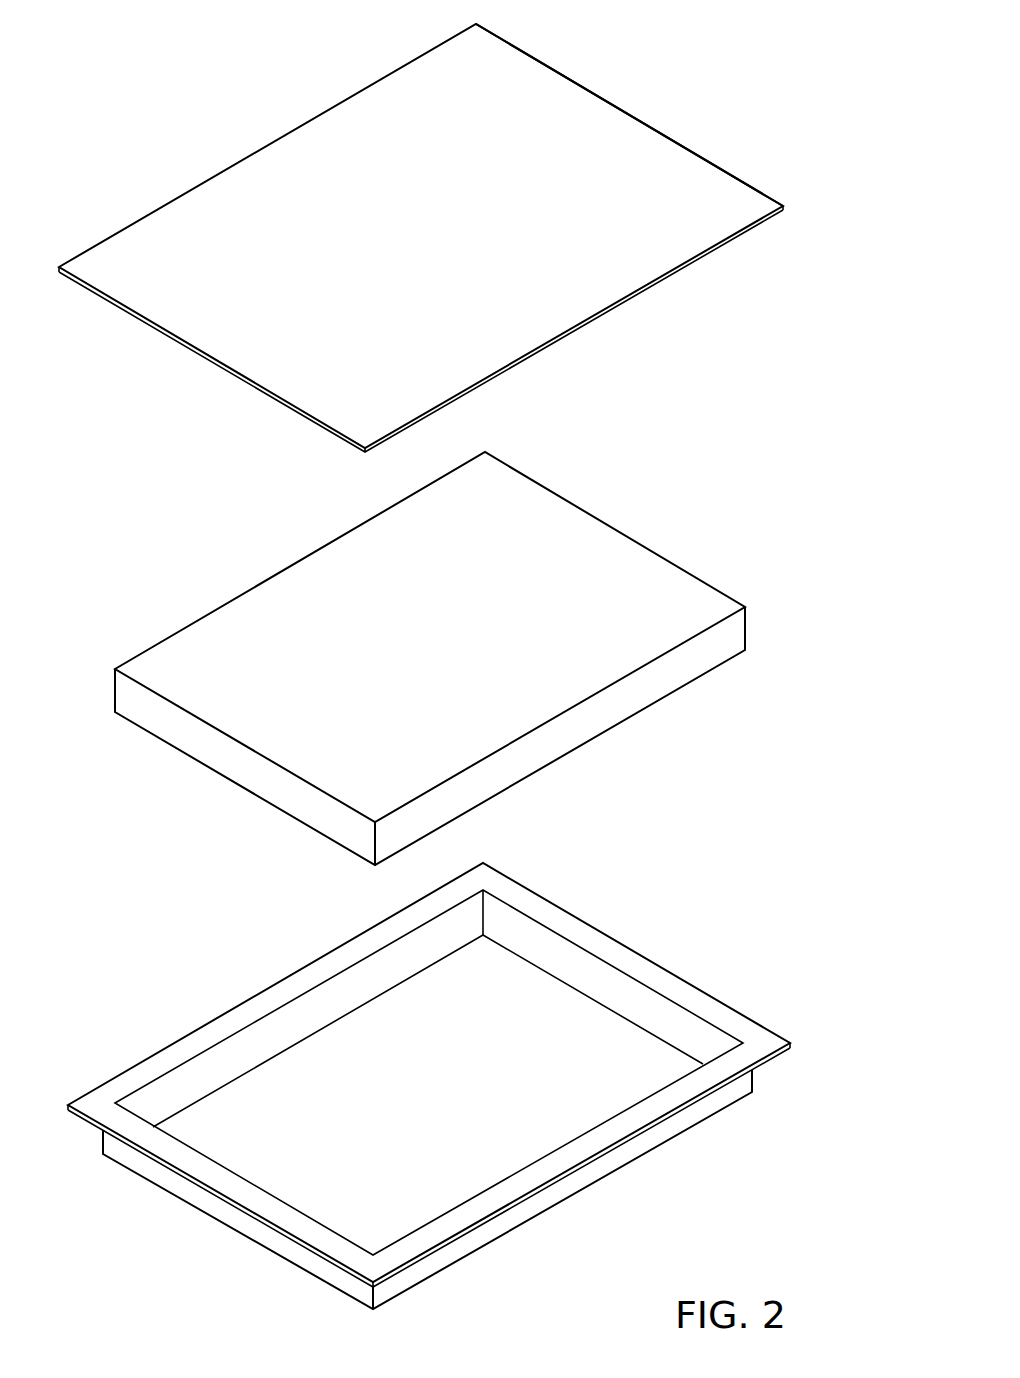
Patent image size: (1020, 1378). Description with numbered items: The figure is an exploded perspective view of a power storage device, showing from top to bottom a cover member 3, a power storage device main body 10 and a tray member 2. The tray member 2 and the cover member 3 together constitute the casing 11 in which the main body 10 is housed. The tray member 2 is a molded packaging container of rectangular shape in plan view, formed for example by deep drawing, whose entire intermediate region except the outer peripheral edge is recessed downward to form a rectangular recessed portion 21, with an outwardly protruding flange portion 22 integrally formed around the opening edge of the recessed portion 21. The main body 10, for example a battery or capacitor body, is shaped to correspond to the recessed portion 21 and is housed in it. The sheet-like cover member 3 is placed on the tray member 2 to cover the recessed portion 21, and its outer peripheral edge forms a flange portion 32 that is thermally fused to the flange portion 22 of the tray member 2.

The cover member 3 is at (563, 150).
The flange portion 32 is at (700, 172).
The power storage device main body 10 is at (577, 545).
The tray member 2 is at (440, 1049).
The recessed portion 21 is at (520, 1007).
The flange portion 22 is at (612, 950).
The casing 11 is at (744, 963).